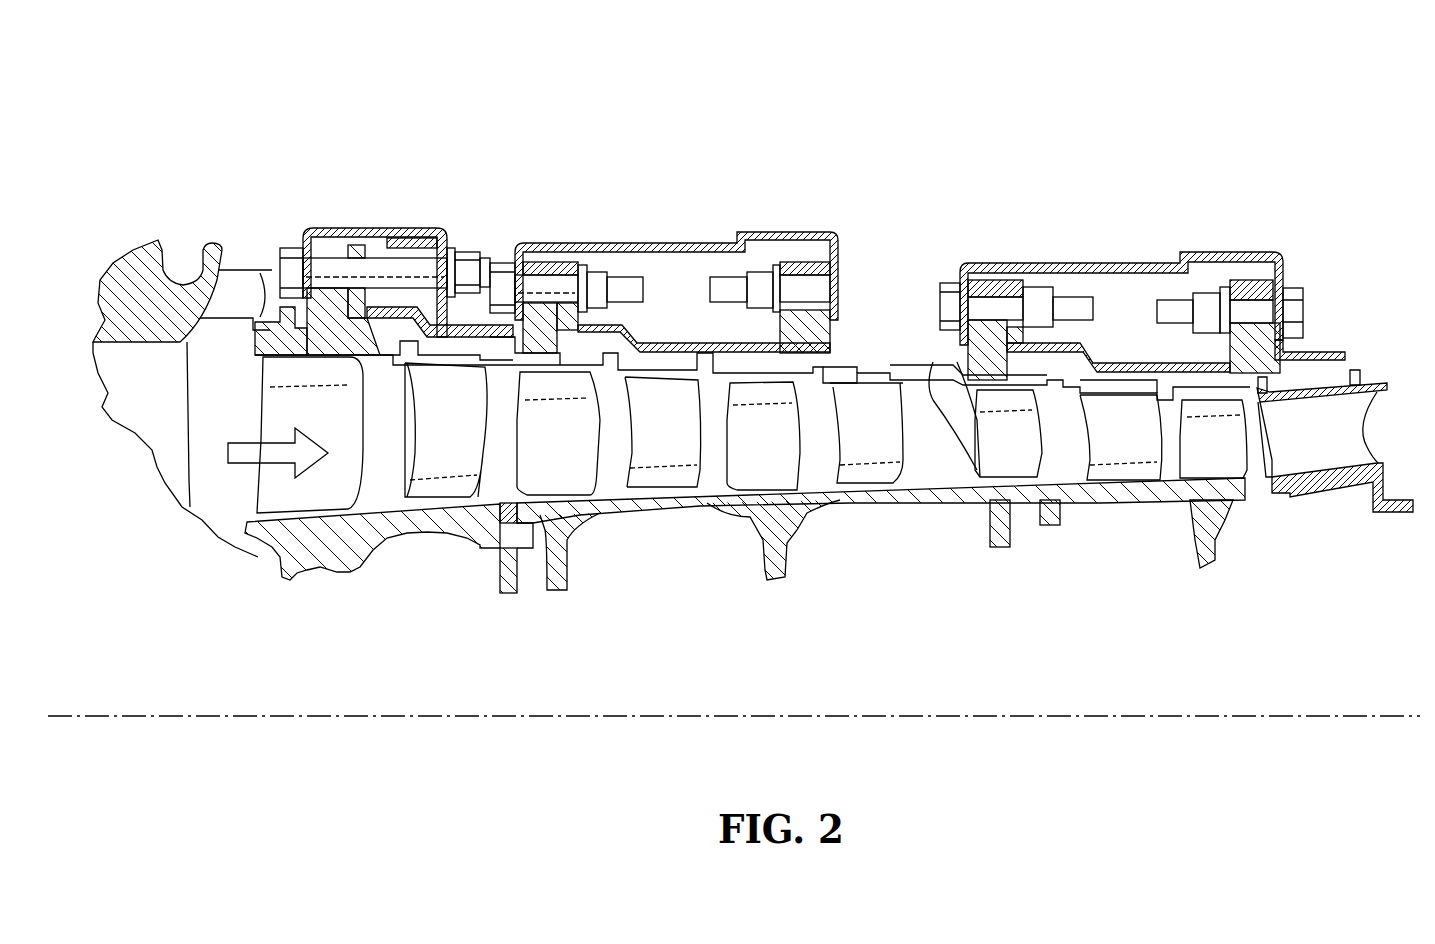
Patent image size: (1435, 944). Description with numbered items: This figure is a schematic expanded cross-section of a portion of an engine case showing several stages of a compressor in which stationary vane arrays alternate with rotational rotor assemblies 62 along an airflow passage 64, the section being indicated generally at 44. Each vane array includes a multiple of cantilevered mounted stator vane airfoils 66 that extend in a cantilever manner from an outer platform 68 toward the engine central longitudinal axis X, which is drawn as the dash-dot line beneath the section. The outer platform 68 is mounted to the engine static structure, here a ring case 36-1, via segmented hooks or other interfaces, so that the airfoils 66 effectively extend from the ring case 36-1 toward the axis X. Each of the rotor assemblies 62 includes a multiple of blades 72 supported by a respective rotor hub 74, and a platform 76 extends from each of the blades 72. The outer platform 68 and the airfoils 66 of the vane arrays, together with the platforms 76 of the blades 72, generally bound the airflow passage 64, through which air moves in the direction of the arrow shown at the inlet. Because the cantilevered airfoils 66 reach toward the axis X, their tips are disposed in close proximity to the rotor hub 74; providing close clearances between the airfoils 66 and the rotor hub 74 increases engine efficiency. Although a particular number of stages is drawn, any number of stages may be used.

The compressor section 44 is at (1082, 164).
The rotor assembly 62 is at (472, 247).
The cantilevered mounted stator vane airfoil 66 is at (388, 301).
The ring case 36-1 is at (672, 290).
The blade 72 is at (997, 428).
The airflow passage 64 is at (245, 457).
The outer platform 68 is at (660, 502).
The rotor hub 74 is at (830, 579).
The platform 76 is at (1230, 530).
The engine central longitudinal axis X is at (1278, 717).